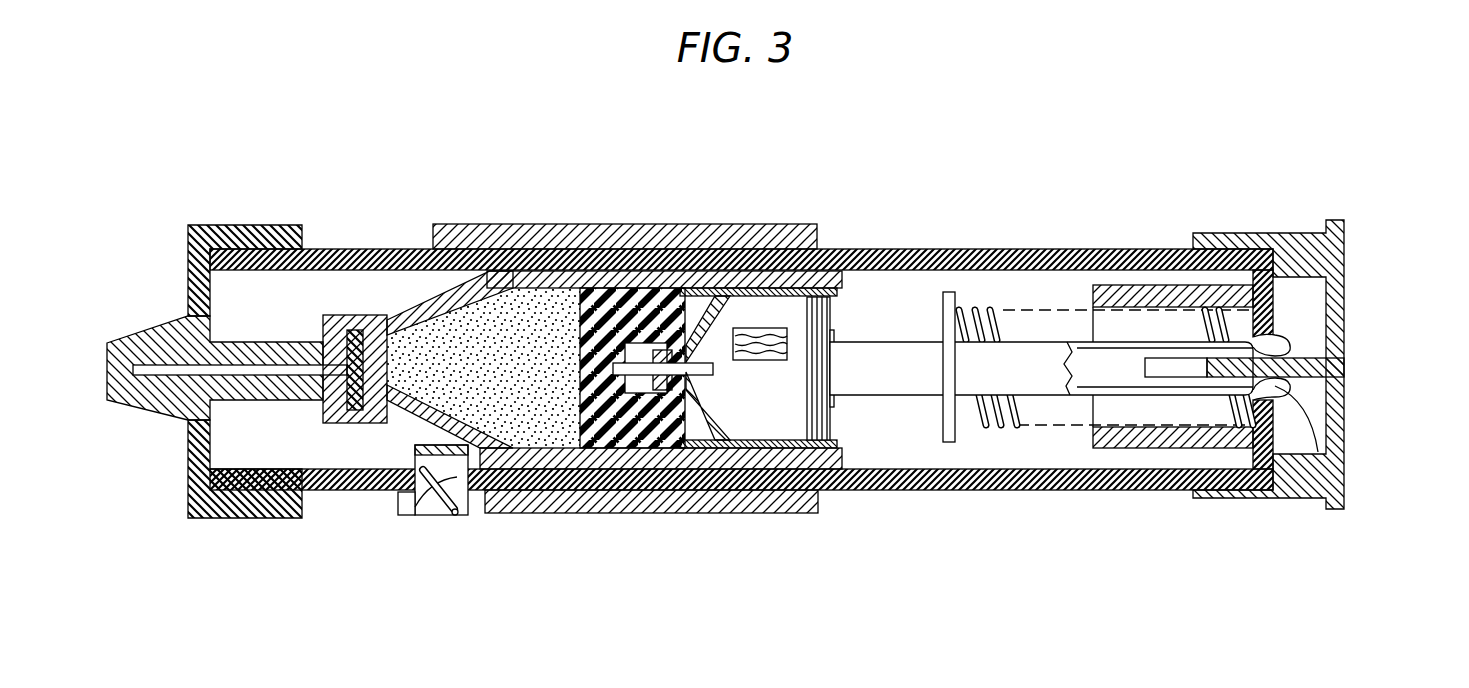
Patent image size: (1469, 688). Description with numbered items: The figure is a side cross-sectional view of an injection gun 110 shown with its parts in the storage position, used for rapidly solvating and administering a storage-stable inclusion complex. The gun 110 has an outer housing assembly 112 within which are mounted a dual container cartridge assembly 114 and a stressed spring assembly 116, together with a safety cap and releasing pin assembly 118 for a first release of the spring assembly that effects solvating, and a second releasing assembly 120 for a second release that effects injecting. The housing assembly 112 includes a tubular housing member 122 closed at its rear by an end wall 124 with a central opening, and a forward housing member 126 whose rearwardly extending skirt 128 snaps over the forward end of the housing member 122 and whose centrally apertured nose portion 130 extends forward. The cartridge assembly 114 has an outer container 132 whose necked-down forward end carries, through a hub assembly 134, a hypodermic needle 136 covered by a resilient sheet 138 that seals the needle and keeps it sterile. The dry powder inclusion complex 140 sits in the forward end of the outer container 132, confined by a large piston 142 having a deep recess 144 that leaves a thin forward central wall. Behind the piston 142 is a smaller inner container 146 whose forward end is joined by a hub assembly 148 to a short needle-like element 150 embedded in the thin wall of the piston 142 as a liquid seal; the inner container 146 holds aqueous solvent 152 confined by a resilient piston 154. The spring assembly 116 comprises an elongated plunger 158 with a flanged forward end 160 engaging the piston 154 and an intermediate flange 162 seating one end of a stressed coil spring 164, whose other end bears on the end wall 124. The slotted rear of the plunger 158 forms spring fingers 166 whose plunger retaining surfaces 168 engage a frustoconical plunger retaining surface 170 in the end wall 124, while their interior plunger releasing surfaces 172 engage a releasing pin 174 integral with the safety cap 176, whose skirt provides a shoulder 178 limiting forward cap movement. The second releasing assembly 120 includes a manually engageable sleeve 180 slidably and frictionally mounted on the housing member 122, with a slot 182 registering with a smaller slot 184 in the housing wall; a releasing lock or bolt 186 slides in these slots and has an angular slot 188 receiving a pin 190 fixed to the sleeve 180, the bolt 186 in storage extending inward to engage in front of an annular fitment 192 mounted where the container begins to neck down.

The gun 110 is at (548, 125).
The outer housing assembly 112 is at (875, 215).
The dual container cartridge assembly 114 is at (762, 500).
The stressed spring assembly 116 is at (1292, 345).
The safety cap and releasing pin assembly 118 is at (1235, 233).
The second releasing assembly 120 is at (578, 513).
The tubular housing member 122 is at (1005, 248).
The end wall 124 is at (1283, 248).
The forward housing member 126 is at (188, 500).
The rearwardly extending skirt 128 is at (268, 225).
The nose portion 130 is at (177, 328).
The outer container 132 is at (624, 462).
The hub assembly 134 is at (352, 315).
The hypodermic needle 136 is at (225, 393).
The resilient sheet 138 is at (290, 338).
The inclusion complex 140 is at (530, 292).
The large piston 142 is at (628, 290).
The deep recess 144 is at (713, 413).
The inner container 146 is at (738, 465).
The hub assembly 148 is at (697, 296).
The needle-like element 150 is at (710, 368).
The aqueous solvent 152 is at (762, 328).
The piston 154 is at (823, 308).
The elongated plunger 158 is at (873, 382).
The flanged forward end 160 is at (834, 333).
The intermediate flange 162 is at (947, 430).
The stressed coil spring 164 is at (988, 430).
The spring fingers 166 is at (1300, 460).
The plunger retaining surfaces 168 is at (1287, 447).
The frustoconical plunger retaining surface 170 is at (1282, 333).
The interior plunger releasing surfaces 172 is at (1315, 398).
The releasing pin 174 is at (1345, 362).
The safety cap 176 is at (1335, 392).
The shoulder 178 is at (1287, 488).
The manually engageable sleeve 180 is at (553, 224).
The slot 182 is at (500, 500).
The smaller slot 184 is at (484, 518).
The releasing lock or bolt 186 is at (415, 450).
The angular slot 188 is at (415, 516).
The pin 190 is at (458, 515).
The annular fitment 192 is at (440, 262).